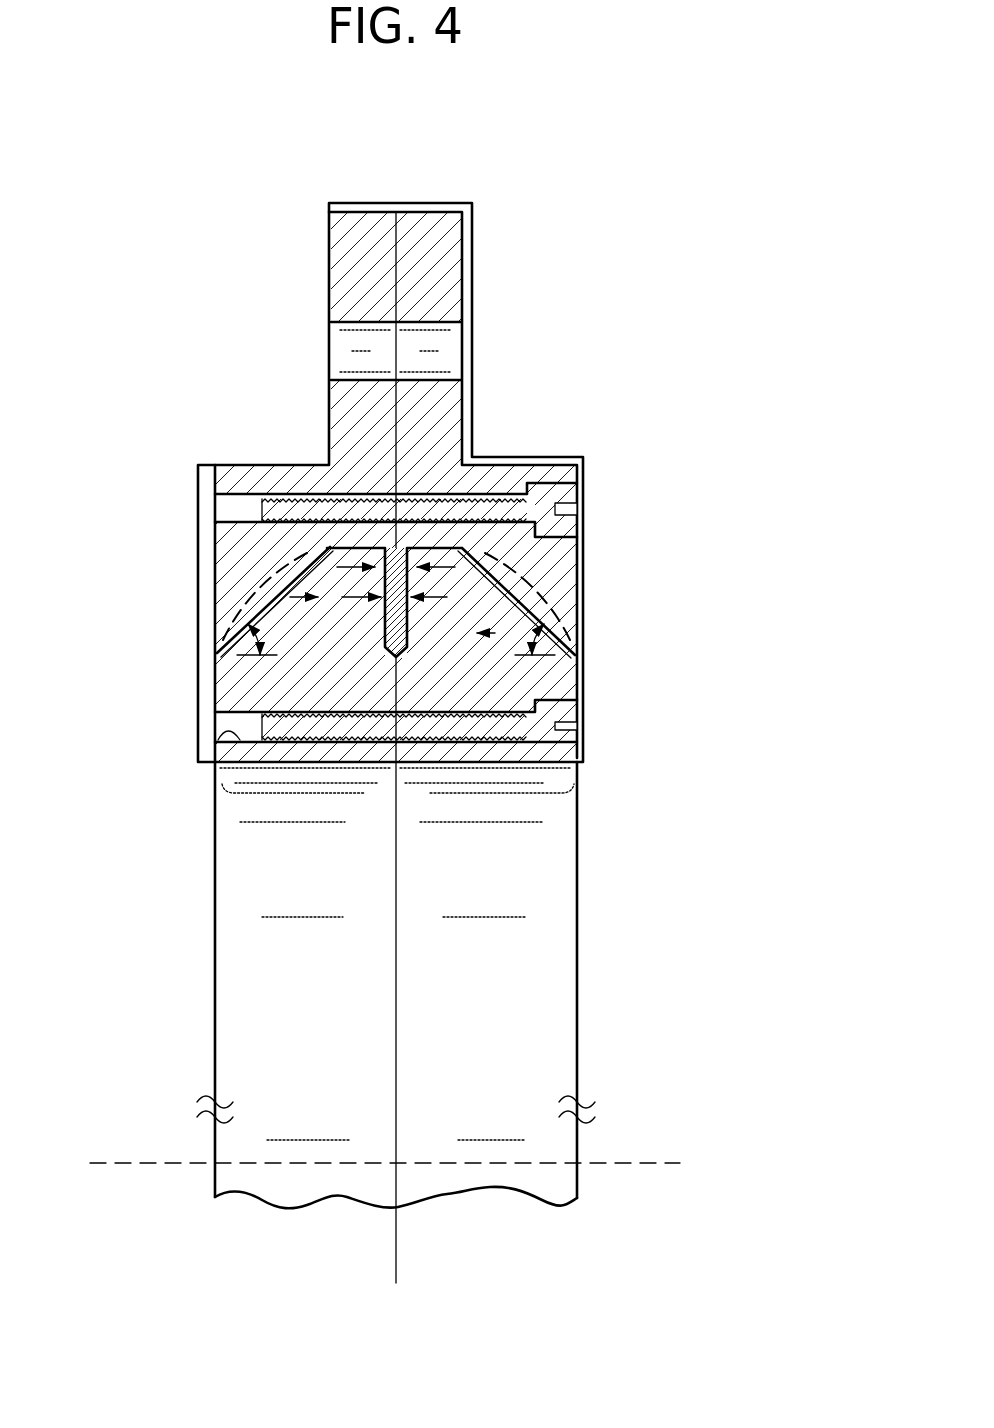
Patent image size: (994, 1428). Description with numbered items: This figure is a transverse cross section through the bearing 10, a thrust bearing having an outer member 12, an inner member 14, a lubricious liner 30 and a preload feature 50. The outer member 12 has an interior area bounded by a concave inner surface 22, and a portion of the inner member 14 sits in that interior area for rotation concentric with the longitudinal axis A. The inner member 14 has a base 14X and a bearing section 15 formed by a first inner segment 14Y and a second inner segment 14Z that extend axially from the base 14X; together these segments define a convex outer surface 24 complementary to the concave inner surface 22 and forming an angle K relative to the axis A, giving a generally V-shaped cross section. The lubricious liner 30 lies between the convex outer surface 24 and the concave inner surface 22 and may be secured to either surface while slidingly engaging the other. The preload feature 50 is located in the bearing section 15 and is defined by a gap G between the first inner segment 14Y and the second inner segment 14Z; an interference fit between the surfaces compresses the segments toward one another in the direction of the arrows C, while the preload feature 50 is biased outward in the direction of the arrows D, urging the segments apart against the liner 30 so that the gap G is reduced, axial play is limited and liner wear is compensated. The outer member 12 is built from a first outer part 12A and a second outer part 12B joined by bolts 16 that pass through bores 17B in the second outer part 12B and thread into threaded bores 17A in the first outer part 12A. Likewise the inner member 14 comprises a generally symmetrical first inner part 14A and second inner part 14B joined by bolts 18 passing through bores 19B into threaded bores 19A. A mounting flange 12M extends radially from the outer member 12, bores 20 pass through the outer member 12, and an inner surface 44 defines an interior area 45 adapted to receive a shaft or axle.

The bearing 10 is at (668, 197).
The outer member 12 is at (330, 190).
The first outer part 12A is at (337, 273).
The second outer part 12B is at (452, 252).
The mounting flange 12M is at (322, 459).
The bores 20 is at (443, 343).
The threaded bores 17A is at (253, 490).
The bores 17B is at (520, 495).
The concave inner surface 22 is at (318, 548).
The bolts 16 is at (578, 508).
The arrows D is at (335, 535).
The arrows C is at (467, 543).
The gap G is at (498, 655).
The first inner part 14A is at (230, 675).
The bearing section 15 is at (243, 608).
The lubricious liner 30 is at (240, 588).
The angle K is at (265, 636).
The first inner segment 14Y is at (288, 603).
The second inner segment 14Z is at (567, 598).
The convex outer surface 24 is at (232, 637).
The second inner part 14B is at (565, 692).
The preload feature 50 is at (520, 687).
The base 14X is at (583, 667).
The bolts 18 is at (492, 738).
The threaded bores 19A is at (222, 728).
The bores 19B is at (512, 745).
The inner member 14 is at (363, 793).
The inner surface 44 is at (500, 975).
The interior area 45 is at (265, 1003).
The axis A is at (630, 1163).